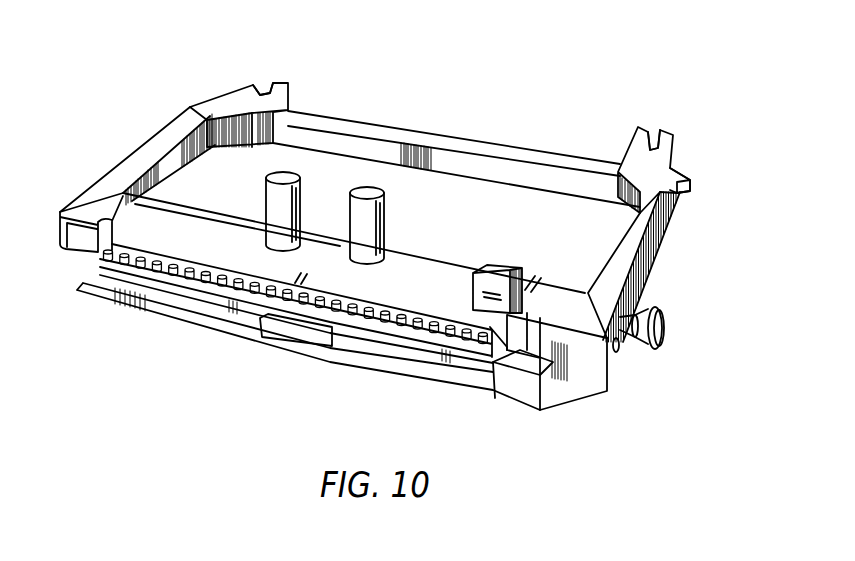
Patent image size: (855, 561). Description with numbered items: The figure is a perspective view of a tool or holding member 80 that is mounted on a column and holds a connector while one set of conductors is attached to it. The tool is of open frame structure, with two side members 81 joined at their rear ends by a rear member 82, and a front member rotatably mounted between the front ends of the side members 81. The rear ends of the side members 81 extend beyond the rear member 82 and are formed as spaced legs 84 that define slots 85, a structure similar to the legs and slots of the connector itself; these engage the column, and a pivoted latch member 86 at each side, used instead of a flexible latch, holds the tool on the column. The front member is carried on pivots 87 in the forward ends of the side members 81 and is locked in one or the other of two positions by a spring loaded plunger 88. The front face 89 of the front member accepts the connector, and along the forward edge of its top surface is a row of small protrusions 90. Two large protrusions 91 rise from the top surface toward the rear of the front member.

The holding member 80 is at (658, 289).
The side members 81 is at (130, 165).
The rear member 82 is at (456, 145).
The spaced legs 84 is at (252, 82).
The slots 85 is at (262, 86).
The pivoted latch member 86 is at (690, 191).
The pivots 87 is at (619, 346).
The spring loaded plunger 88 is at (665, 331).
The front face 89 is at (475, 360).
The small protrusions 90 is at (185, 272).
The large protrusions 91 is at (365, 190).